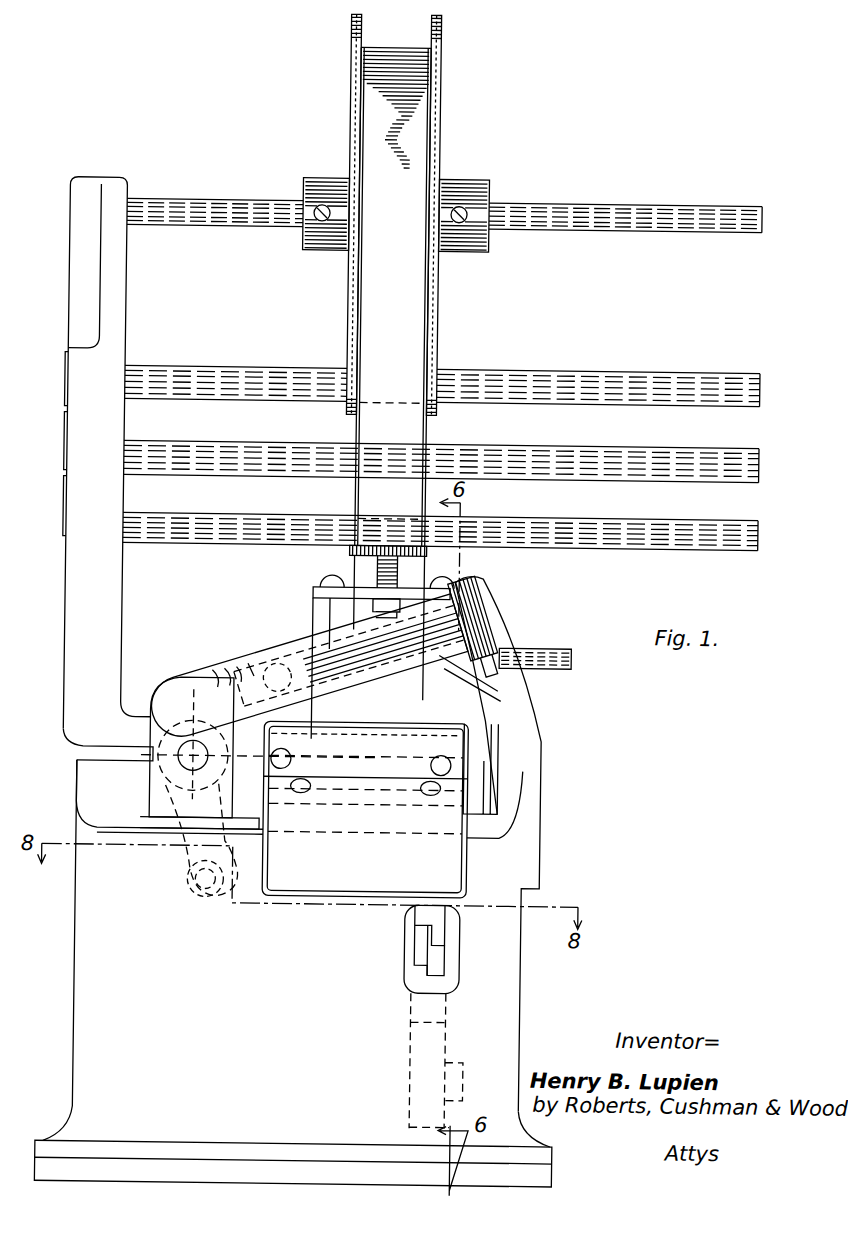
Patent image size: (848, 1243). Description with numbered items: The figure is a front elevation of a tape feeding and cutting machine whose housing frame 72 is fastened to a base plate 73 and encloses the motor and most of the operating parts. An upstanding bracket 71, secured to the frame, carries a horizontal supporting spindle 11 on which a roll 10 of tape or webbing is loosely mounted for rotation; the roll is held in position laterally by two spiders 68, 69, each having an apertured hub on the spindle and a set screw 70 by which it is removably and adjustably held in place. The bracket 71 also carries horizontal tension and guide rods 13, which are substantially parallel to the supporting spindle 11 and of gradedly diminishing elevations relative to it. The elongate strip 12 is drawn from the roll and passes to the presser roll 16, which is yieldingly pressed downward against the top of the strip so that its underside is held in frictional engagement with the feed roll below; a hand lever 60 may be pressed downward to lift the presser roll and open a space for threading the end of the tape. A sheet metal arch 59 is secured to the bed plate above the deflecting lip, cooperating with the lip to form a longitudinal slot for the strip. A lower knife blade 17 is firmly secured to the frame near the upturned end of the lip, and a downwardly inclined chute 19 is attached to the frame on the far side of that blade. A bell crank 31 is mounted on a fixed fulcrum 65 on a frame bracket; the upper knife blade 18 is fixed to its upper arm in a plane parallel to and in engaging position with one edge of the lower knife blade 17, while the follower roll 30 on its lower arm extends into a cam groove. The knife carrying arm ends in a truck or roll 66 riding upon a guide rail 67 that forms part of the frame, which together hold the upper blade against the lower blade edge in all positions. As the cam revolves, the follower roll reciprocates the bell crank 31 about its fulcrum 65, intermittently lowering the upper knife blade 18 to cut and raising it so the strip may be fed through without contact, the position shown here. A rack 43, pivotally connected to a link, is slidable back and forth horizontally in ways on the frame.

The roll 10 is at (406, 96).
The supporting spindle 11 is at (545, 200).
The strip of tape or webbing 12 is at (391, 373).
The tension and guide rods 13 is at (628, 516).
The presser roll 16 is at (398, 690).
The lower knife blade 17 is at (483, 752).
The upper knife blade 18 is at (507, 689).
The chute 19 is at (365, 809).
The follower roll 30 is at (214, 900).
The bell crank 31 is at (166, 692).
The rack 43 is at (429, 930).
The sheet metal arch 59 is at (366, 718).
The hand lever 60 is at (550, 655).
The fulcrum 65 is at (180, 768).
The truck or roll 66 is at (486, 624).
The guide rail 67 is at (507, 710).
The spider 68 is at (346, 116).
The spider 69 is at (432, 130).
The set screw 70 is at (316, 222).
The upstanding bracket 71 is at (122, 315).
The housing frame 72 is at (530, 984).
The base plate 73 is at (562, 1178).